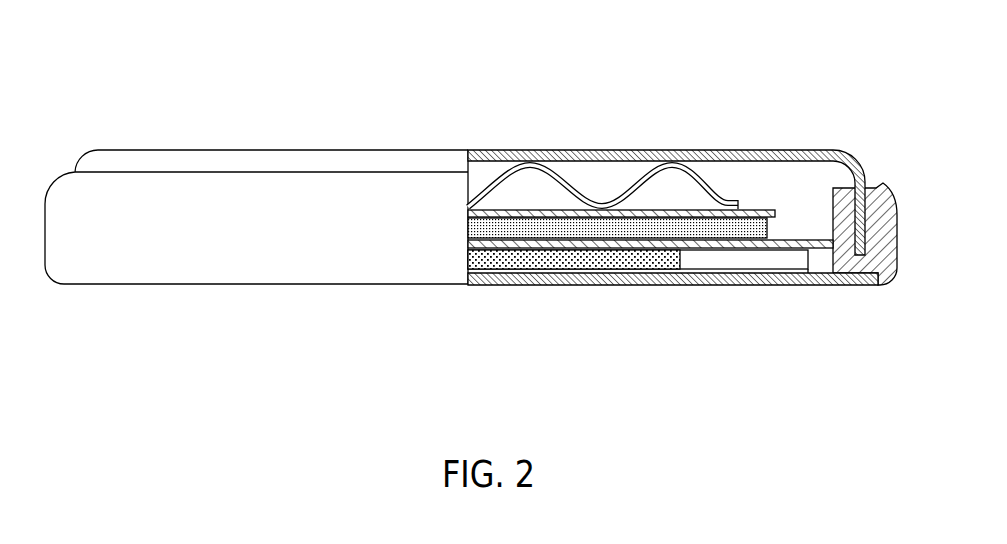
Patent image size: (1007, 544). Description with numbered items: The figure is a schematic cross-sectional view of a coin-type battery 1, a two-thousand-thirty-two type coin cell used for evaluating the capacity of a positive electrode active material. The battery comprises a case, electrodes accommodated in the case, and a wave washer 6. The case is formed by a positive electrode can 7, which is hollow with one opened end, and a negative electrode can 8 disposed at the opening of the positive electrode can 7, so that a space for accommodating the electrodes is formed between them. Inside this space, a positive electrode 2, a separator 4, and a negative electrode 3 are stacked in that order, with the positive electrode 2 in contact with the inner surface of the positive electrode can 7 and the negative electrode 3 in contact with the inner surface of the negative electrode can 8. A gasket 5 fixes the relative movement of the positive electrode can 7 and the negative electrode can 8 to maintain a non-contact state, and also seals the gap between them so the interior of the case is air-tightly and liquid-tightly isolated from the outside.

The coin-type battery 1 is at (225, 100).
The positive electrode 2 is at (627, 285).
The negative electrode 3 is at (768, 230).
The separator 4 is at (800, 240).
The gasket 5 is at (885, 235).
The wave washer 6 is at (573, 190).
The positive electrode can 7 is at (518, 285).
The negative electrode can 8 is at (492, 151).